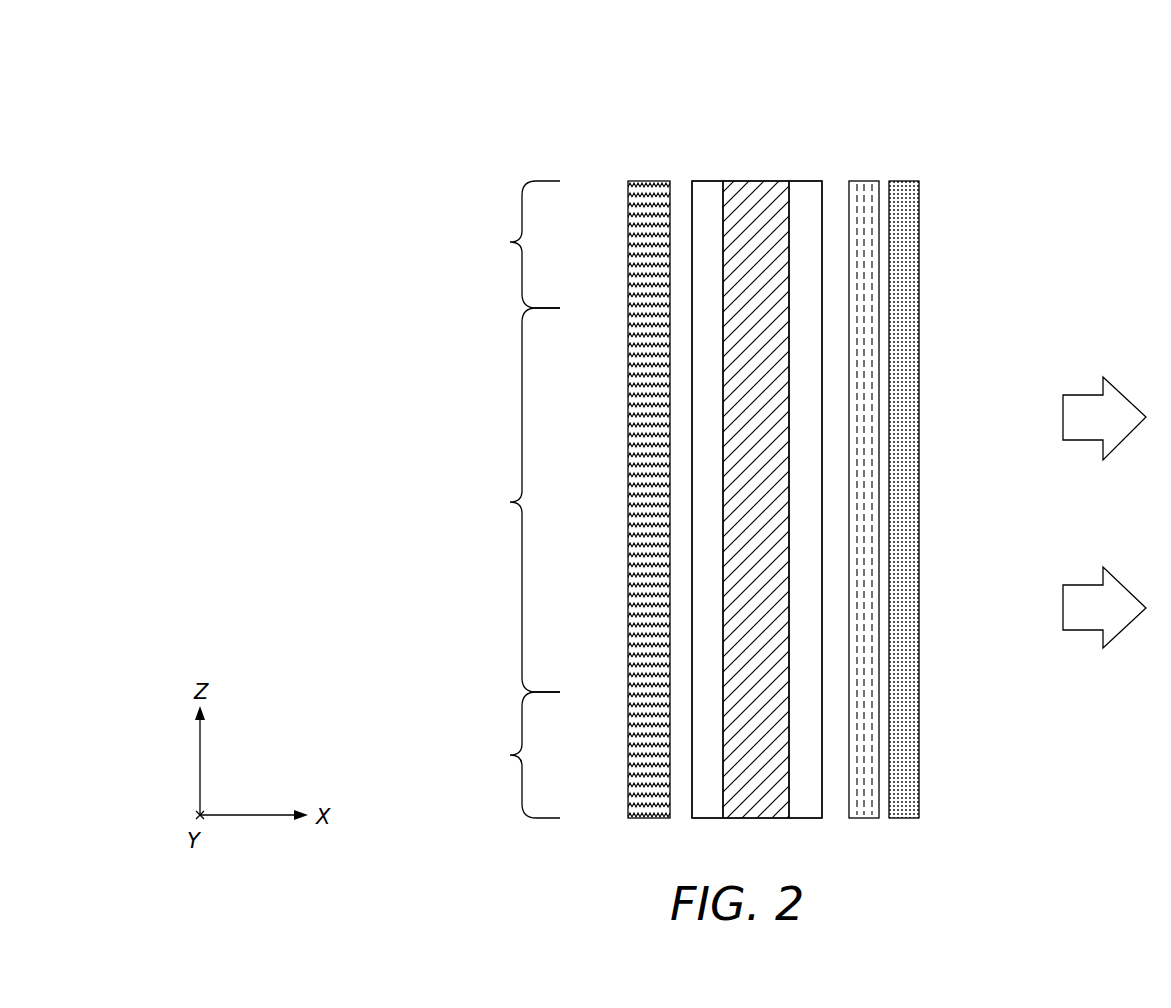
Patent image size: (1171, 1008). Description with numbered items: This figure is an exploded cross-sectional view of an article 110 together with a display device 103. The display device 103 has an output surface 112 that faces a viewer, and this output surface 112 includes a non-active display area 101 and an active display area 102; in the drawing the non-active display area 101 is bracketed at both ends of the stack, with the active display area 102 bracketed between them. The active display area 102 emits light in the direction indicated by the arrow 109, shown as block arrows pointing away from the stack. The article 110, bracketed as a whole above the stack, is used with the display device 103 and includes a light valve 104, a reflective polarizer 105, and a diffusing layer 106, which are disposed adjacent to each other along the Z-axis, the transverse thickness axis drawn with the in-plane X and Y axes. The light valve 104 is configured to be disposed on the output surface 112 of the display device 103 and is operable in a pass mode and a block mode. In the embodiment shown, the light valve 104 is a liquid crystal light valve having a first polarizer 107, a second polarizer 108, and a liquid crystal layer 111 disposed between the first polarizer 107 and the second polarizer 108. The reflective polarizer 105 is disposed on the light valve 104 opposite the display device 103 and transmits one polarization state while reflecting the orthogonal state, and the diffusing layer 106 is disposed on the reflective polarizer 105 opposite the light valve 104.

The non-active display area 101 is at (508, 242).
The active display area 102 is at (508, 502).
The display device 103 is at (608, 143).
The light valve 104 is at (822, 138).
The reflective polarizer 105 is at (863, 186).
The diffusing layer 106 is at (912, 186).
The first polarizer 107 is at (706, 190).
The second polarizer 108 is at (795, 190).
The arrow 109 is at (1089, 393).
The article 110 is at (919, 100).
The liquid crystal layer 111 is at (748, 190).
The output surface 112 is at (668, 182).